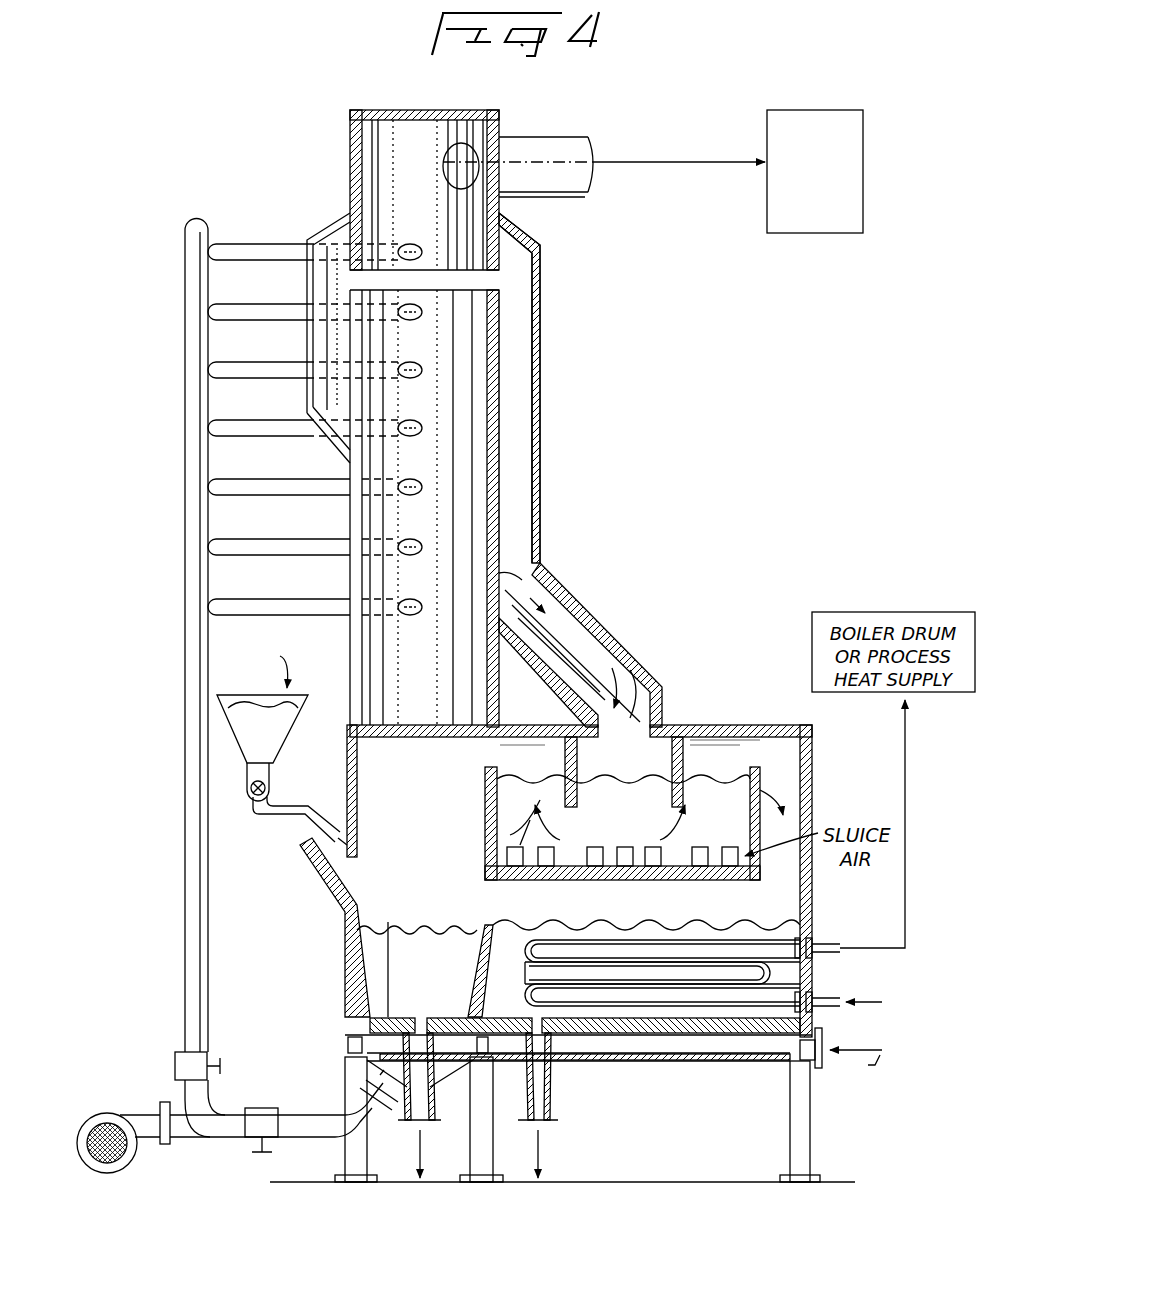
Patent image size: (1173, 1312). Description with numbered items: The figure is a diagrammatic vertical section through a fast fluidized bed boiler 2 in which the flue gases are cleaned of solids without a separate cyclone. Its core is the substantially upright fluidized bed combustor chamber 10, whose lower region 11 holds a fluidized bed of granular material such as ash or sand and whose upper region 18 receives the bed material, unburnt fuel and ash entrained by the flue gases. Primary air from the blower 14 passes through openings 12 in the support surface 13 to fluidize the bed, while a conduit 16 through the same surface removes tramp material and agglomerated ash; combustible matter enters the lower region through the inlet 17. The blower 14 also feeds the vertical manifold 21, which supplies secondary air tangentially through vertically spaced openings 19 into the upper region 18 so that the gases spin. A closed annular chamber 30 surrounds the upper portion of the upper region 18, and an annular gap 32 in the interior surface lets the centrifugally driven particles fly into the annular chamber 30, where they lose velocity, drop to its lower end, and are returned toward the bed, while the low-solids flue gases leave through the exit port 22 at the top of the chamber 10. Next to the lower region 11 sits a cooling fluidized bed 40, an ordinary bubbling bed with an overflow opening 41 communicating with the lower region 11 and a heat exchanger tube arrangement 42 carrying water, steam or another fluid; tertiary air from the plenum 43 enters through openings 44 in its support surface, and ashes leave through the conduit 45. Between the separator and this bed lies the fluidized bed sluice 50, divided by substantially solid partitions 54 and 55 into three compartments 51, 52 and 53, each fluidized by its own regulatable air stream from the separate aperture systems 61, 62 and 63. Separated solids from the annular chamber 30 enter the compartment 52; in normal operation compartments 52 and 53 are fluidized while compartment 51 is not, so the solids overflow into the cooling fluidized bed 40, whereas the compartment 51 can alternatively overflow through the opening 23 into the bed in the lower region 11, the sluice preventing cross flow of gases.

The fast fluidized bed boiler 2 is at (262, 185).
The fluidized bed combustor chamber 10 is at (505, 530).
The lower region 11 is at (378, 955).
The openings 12 is at (393, 925).
The support surface 13 is at (375, 1025).
The blower 14 is at (132, 1150).
The conduit 16 is at (420, 1118).
The inlet 17 is at (337, 881).
The upper region 18 is at (476, 435).
The openings 19 is at (405, 250).
The vertical manifold 21 is at (185, 440).
The exit port 22 is at (462, 152).
The opening 23 is at (487, 800).
The annular chamber 30 is at (540, 362).
The annular gap 32 is at (499, 272).
The cooling fluidized bed 40 is at (790, 930).
The overflow opening 41 is at (465, 918).
The heat exchanger tube arrangement 42 is at (768, 965).
The plenum 43 is at (808, 1068).
The openings 44 is at (748, 1037).
The conduit 45 is at (552, 1113).
The fluidized bed sluice 50 is at (785, 822).
The compartment 51 is at (545, 763).
The compartment 52 is at (635, 765).
The compartment 53 is at (730, 765).
The partition 54 is at (558, 757).
The partition 55 is at (684, 760).
The fluidizing aperture system 61 is at (525, 868).
The fluidizing aperture system 62 is at (610, 868).
The fluidizing aperture system 63 is at (700, 868).